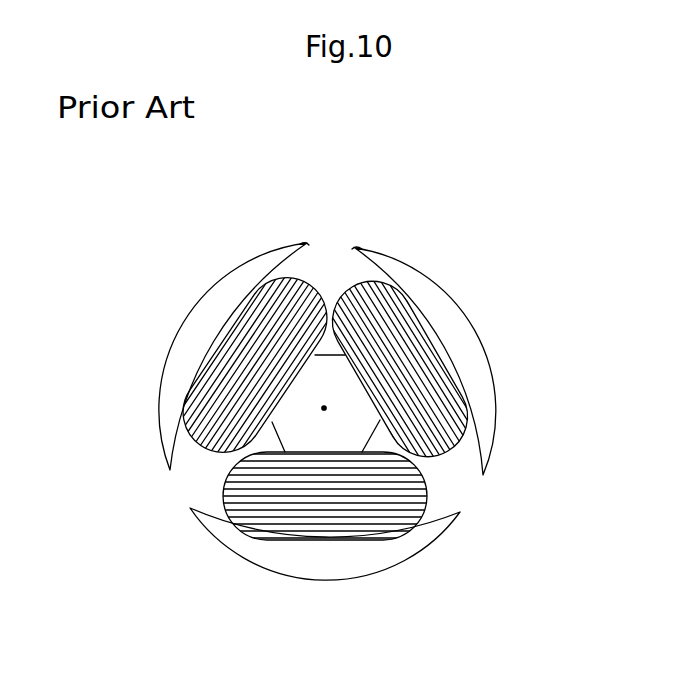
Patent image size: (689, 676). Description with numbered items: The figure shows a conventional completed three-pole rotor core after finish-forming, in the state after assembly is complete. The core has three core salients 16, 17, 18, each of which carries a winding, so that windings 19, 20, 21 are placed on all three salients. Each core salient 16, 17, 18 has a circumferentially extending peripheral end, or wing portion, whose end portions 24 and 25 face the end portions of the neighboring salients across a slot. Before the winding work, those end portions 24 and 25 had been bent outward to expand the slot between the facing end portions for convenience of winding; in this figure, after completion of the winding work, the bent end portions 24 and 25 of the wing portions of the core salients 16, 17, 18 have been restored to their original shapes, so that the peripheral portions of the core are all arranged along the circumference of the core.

The core salient 16 is at (203, 330).
The core salient 17 is at (457, 318).
The core salient 18 is at (338, 563).
The coil 19 is at (260, 517).
The coil 20 is at (445, 405).
The coil 21 is at (217, 403).
The end portion 24 is at (298, 248).
The end portion 25 is at (360, 250).